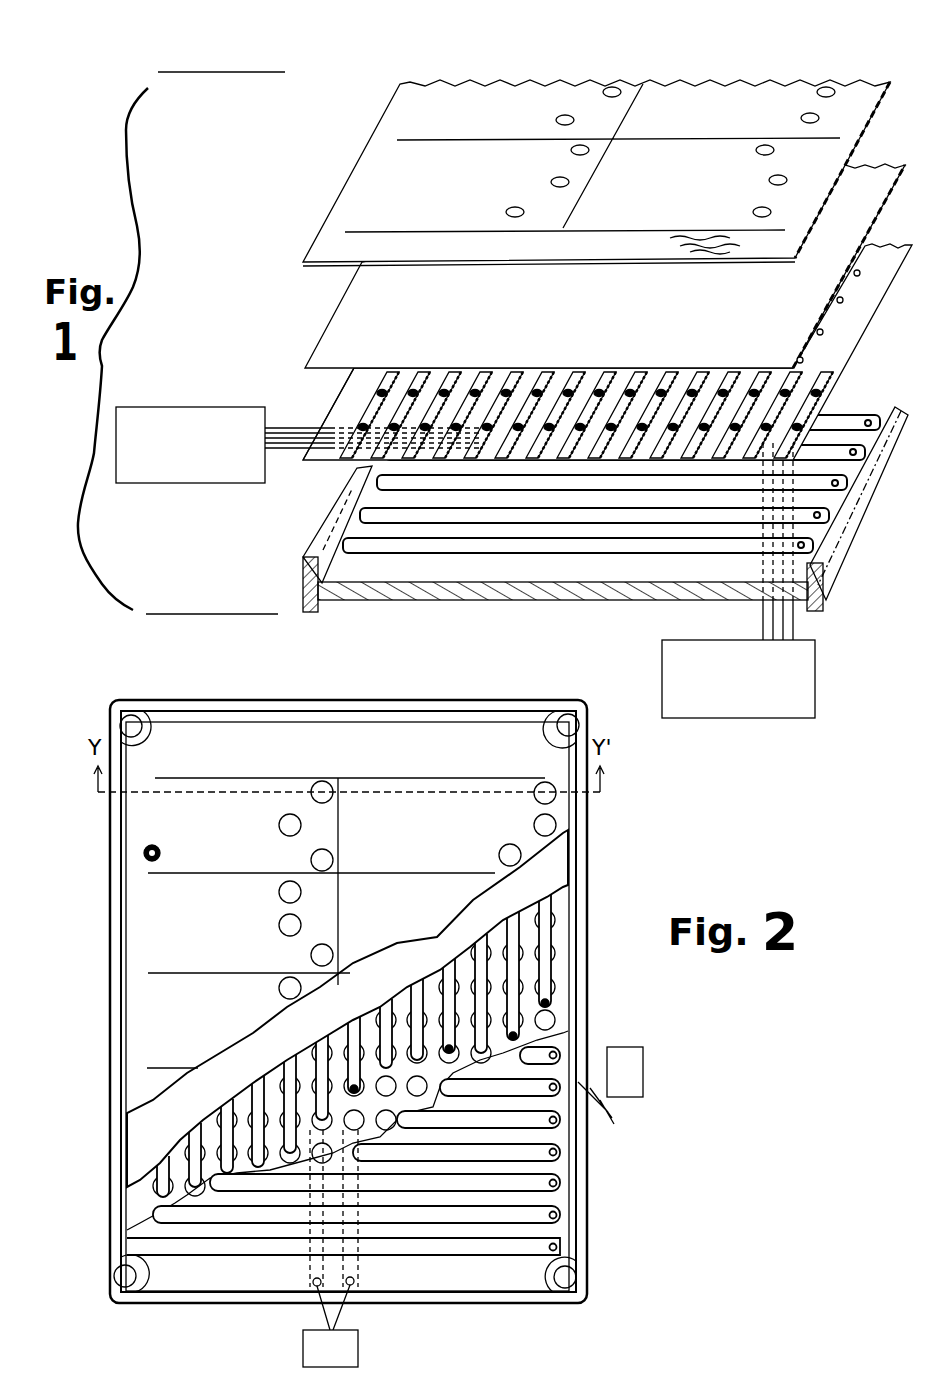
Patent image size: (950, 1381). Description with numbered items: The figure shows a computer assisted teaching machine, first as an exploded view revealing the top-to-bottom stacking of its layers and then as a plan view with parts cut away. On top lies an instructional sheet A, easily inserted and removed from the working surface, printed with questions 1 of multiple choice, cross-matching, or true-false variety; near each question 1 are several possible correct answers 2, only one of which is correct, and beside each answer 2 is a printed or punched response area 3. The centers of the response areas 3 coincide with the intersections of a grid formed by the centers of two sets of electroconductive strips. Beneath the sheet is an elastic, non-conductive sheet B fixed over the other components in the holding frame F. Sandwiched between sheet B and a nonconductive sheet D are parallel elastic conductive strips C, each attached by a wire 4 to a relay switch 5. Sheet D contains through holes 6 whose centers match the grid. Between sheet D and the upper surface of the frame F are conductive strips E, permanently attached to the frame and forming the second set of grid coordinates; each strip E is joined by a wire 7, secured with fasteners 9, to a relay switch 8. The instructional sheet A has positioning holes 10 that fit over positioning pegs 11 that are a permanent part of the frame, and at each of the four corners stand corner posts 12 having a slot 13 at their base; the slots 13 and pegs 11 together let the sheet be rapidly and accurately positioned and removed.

In FIG. 1, the questions 1 is at (492, 86).
In FIG. 2, the questions 1 is at (170, 822).
In FIG. 1, the possible correct answers 2 is at (778, 84).
In FIG. 2, the possible correct answers 2 is at (517, 780).
In FIG. 1, the response area 3 is at (790, 180).
In FIG. 2, the response area 3 is at (552, 823).
In FIG. 1, the wire 4 is at (279, 454).
In FIG. 2, the wire 4 is at (343, 1308).
In FIG. 1, the relay switch 5 is at (221, 484).
In FIG. 2, the relay switch 5 is at (330, 1348).
In FIG. 1, the through holes 6 is at (767, 423).
In FIG. 2, the through holes 6 is at (460, 1073).
In FIG. 1, the wire 7 is at (788, 630).
In FIG. 2, the wire 7 is at (603, 1109).
In FIG. 1, the relay switch 8 is at (818, 670).
In FIG. 2, the relay switch 8 is at (560, 1087).
In FIG. 2, the fasteners 9 is at (560, 1248).
In FIG. 2, the positioning holes 10 is at (150, 858).
In FIG. 2, the positioning pegs 11 is at (145, 851).
In FIG. 2, the corner posts 12 is at (115, 1276).
In FIG. 2, the slot 13 is at (145, 1290).